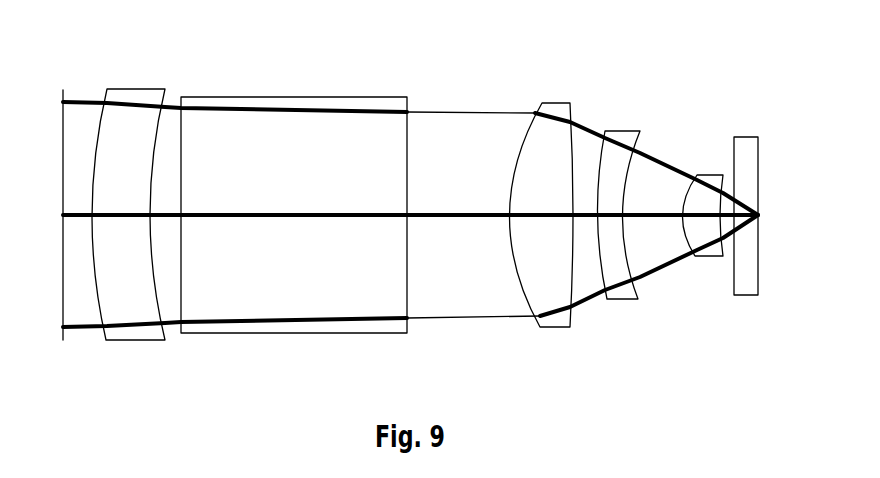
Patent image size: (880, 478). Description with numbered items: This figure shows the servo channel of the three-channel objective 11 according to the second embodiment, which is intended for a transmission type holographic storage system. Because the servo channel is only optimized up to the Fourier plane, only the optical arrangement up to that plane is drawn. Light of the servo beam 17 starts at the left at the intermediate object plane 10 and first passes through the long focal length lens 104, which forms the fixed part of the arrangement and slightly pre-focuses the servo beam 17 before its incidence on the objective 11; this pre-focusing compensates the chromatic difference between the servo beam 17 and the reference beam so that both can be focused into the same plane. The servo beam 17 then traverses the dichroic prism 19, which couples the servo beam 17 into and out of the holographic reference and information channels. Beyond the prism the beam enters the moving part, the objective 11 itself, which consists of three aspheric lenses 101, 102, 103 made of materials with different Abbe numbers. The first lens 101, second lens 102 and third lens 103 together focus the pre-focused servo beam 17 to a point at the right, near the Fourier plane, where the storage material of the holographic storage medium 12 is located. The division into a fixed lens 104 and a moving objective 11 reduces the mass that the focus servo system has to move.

The intermediate object plane 10 is at (65, 90).
The three-channel objective 11 is at (615, 205).
The holographic storage medium 12 is at (743, 137).
The servo beam 17 is at (472, 320).
The dichroic prism 19 is at (407, 97).
The first lens 101 is at (553, 328).
The second lens 102 is at (625, 302).
The third lens 103 is at (715, 262).
The long focal length lens 104 is at (135, 345).